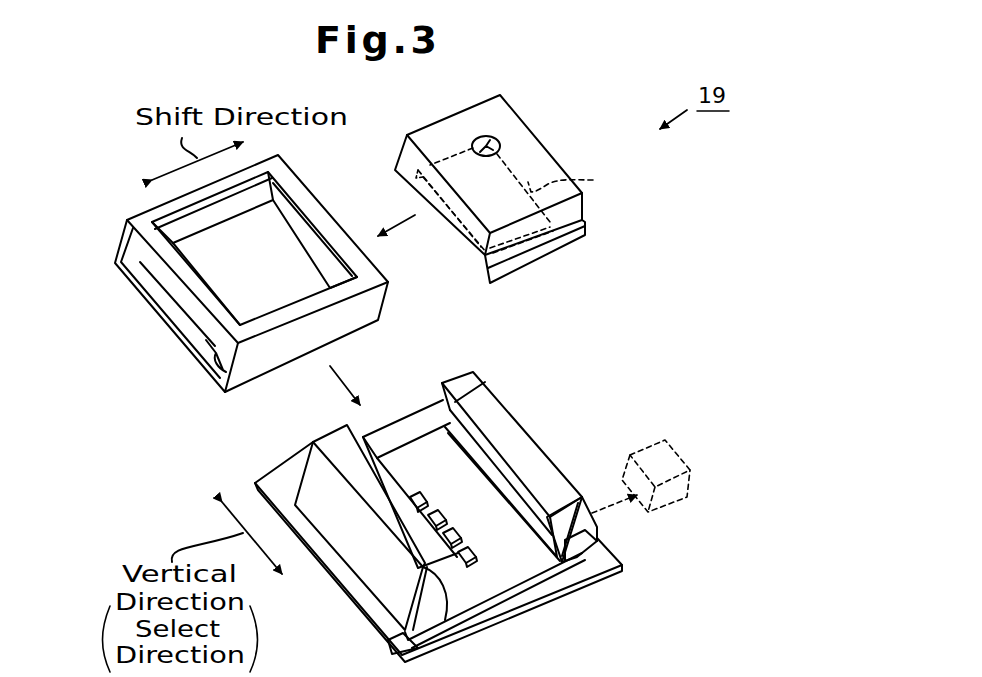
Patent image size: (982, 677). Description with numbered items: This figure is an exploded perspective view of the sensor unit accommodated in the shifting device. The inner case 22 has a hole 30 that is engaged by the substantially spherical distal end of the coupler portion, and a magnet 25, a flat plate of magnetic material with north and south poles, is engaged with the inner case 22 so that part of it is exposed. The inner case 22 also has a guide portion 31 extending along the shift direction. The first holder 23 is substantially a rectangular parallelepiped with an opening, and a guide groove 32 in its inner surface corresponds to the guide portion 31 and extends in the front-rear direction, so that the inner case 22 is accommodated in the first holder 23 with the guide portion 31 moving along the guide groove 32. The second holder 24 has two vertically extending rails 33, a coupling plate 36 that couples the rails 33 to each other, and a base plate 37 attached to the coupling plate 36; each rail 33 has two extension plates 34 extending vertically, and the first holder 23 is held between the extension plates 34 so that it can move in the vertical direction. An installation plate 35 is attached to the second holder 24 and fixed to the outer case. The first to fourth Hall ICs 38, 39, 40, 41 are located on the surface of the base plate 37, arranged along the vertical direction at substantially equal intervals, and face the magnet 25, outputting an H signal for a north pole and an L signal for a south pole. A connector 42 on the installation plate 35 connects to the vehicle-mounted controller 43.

The inner case 22 is at (548, 143).
The first holder 23 is at (126, 219).
The second holder 24 is at (526, 427).
The magnet 25 is at (578, 176).
The hole 30 is at (496, 142).
The guide portion 31 is at (547, 253).
The guide groove 32 is at (204, 370).
The rails 33 is at (412, 592).
The extension plates 34 is at (466, 376).
The installation plate 35 is at (547, 603).
The coupling plate 36 is at (483, 600).
The base plate 37 is at (397, 460).
The first Hall IC 38 is at (420, 492).
The second Hall IC 39 is at (439, 511).
The third Hall IC 40 is at (456, 531).
The fourth Hall IC 41 is at (473, 552).
The connector 42 is at (587, 545).
The controller 43 is at (677, 450).